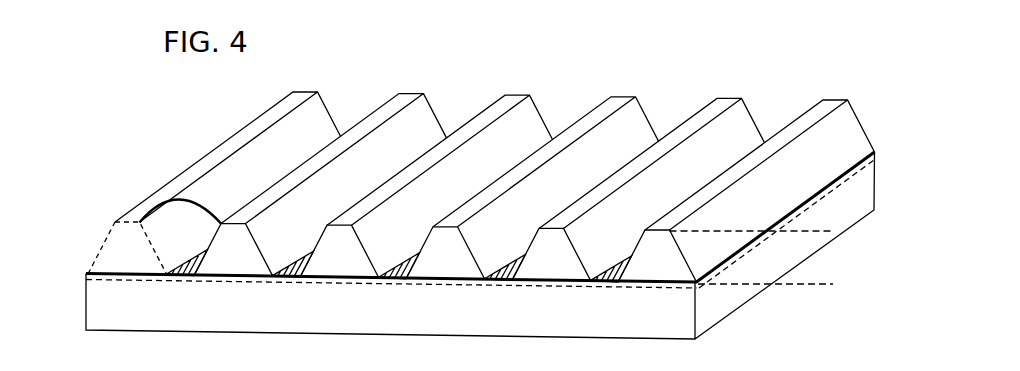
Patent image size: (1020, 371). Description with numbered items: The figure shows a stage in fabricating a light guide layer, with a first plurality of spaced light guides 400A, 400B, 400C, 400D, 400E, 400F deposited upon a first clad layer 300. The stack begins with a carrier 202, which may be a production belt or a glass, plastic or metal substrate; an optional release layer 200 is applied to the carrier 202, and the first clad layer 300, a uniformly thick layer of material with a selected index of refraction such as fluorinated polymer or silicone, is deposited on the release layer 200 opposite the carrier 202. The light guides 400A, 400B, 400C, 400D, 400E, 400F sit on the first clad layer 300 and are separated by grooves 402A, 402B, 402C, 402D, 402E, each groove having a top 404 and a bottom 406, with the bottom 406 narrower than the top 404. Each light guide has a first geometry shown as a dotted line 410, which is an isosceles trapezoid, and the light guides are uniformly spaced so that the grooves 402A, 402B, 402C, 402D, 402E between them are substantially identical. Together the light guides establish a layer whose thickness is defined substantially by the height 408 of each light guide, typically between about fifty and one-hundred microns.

The release layer 200 is at (691, 294).
The carrier 202 is at (447, 326).
The first clad layer 300 is at (327, 281).
The light guide 400A is at (145, 266).
The light guide 400B is at (254, 266).
The light guide 400C is at (360, 266).
The light guide 400D is at (464, 270).
The light guide 400E is at (575, 270).
The light guide 400F is at (677, 270).
The groove 402A is at (247, 180).
The groove 402B is at (397, 150).
The groove 402C is at (516, 141).
The groove 402D is at (627, 138).
The groove 402E is at (732, 145).
The top 404 is at (178, 201).
The bottom 406 is at (168, 275).
The height 408 is at (825, 233).
The first geometry 410 is at (107, 238).